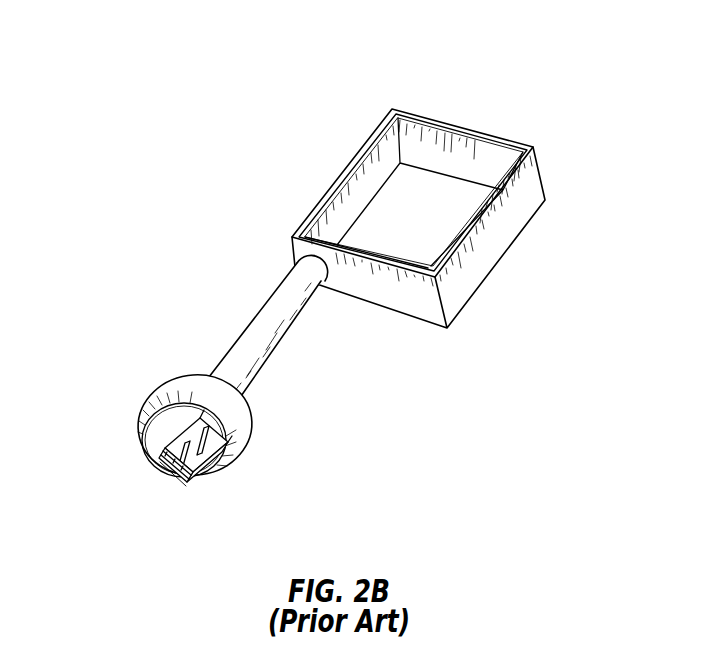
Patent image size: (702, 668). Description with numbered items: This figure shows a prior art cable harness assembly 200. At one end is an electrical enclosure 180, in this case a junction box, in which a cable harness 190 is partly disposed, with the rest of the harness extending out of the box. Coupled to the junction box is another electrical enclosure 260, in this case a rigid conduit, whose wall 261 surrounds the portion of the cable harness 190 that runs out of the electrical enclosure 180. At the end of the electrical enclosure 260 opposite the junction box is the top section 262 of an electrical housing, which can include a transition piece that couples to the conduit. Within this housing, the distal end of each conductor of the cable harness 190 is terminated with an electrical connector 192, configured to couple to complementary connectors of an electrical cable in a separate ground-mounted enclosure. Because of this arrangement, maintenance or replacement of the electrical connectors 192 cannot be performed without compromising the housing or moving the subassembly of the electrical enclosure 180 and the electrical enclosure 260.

The cable harness assembly 200 is at (112, 70).
The electrical enclosure 180 is at (530, 143).
The electrical enclosure 260 is at (252, 325).
The wall 261 is at (274, 344).
The top section 262 is at (166, 394).
The cable harness 190 is at (213, 473).
The electrical connector 192 is at (168, 476).